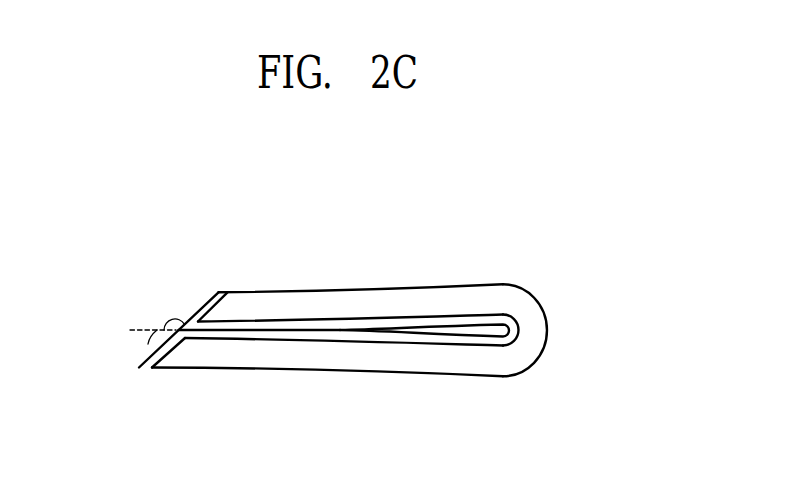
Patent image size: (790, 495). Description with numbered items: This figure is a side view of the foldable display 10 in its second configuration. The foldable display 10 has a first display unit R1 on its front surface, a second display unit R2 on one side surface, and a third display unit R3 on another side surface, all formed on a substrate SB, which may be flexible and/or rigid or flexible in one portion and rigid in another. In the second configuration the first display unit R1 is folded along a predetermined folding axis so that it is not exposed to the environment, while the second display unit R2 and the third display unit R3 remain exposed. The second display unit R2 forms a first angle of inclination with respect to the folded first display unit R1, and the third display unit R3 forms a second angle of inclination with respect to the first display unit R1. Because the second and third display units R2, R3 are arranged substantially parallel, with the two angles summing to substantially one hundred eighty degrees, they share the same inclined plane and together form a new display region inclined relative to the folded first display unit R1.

The foldable display 10 is at (343, 309).
The first display unit R1 is at (456, 322).
The second display unit R2 is at (143, 362).
The third display unit R3 is at (205, 305).
The substrate SB is at (537, 330).